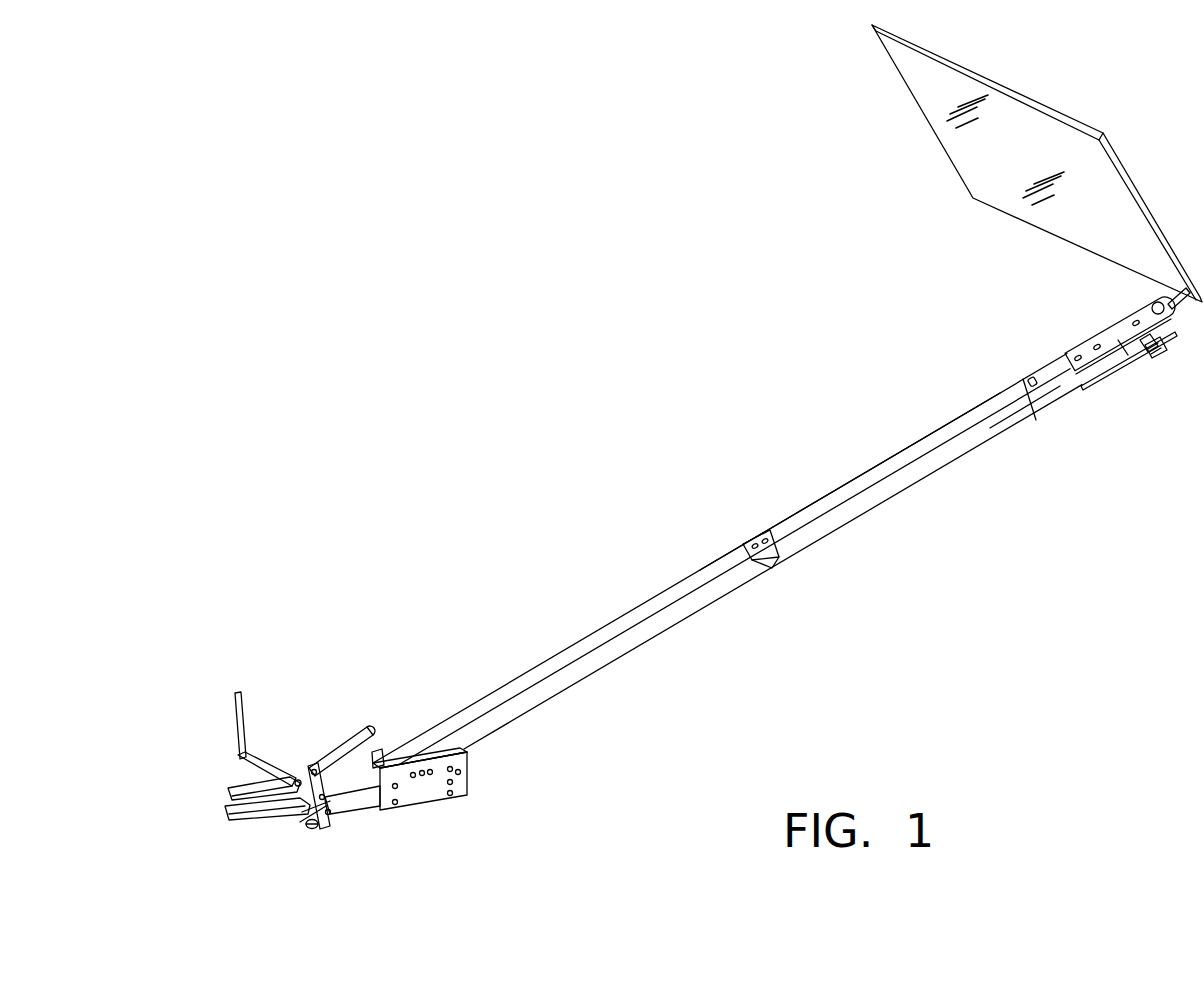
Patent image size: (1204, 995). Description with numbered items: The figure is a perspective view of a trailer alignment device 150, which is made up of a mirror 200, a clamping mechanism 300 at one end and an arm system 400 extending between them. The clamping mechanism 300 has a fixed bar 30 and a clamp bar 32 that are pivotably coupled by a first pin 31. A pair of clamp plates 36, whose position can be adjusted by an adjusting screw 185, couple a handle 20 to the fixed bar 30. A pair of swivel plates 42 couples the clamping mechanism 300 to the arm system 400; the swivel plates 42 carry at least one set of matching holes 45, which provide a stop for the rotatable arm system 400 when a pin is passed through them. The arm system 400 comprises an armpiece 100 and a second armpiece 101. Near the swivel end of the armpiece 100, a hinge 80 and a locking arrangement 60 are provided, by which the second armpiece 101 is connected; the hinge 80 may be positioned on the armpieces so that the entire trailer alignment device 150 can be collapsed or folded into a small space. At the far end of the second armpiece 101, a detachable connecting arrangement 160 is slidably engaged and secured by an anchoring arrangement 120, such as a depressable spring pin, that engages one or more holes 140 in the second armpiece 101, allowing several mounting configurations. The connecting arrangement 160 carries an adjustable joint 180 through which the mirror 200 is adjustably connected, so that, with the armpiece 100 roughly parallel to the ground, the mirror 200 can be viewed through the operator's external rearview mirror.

The handle 20 is at (358, 740).
The fixed bar 30 is at (232, 822).
The first pin 31 is at (296, 817).
The clamp bar 32 is at (242, 787).
The clamp plates 36 is at (312, 770).
The swivel plates 42 is at (430, 793).
The matching holes 45 is at (460, 766).
The locking arrangement 60 is at (755, 532).
The hinge 80 is at (772, 567).
The armpiece 100 is at (523, 680).
The second armpiece 101 is at (866, 480).
The anchoring arrangement 120 is at (1011, 398).
The holes 140 is at (1017, 423).
The trailer alignment device 150 is at (476, 244).
The connecting arrangement 160 is at (1118, 328).
The adjustable joint 180 is at (1177, 332).
The adjusting screw 185 is at (317, 826).
The mirror 200 is at (960, 150).
The clamping mechanism 300 is at (276, 620).
The arm system 400 is at (935, 610).